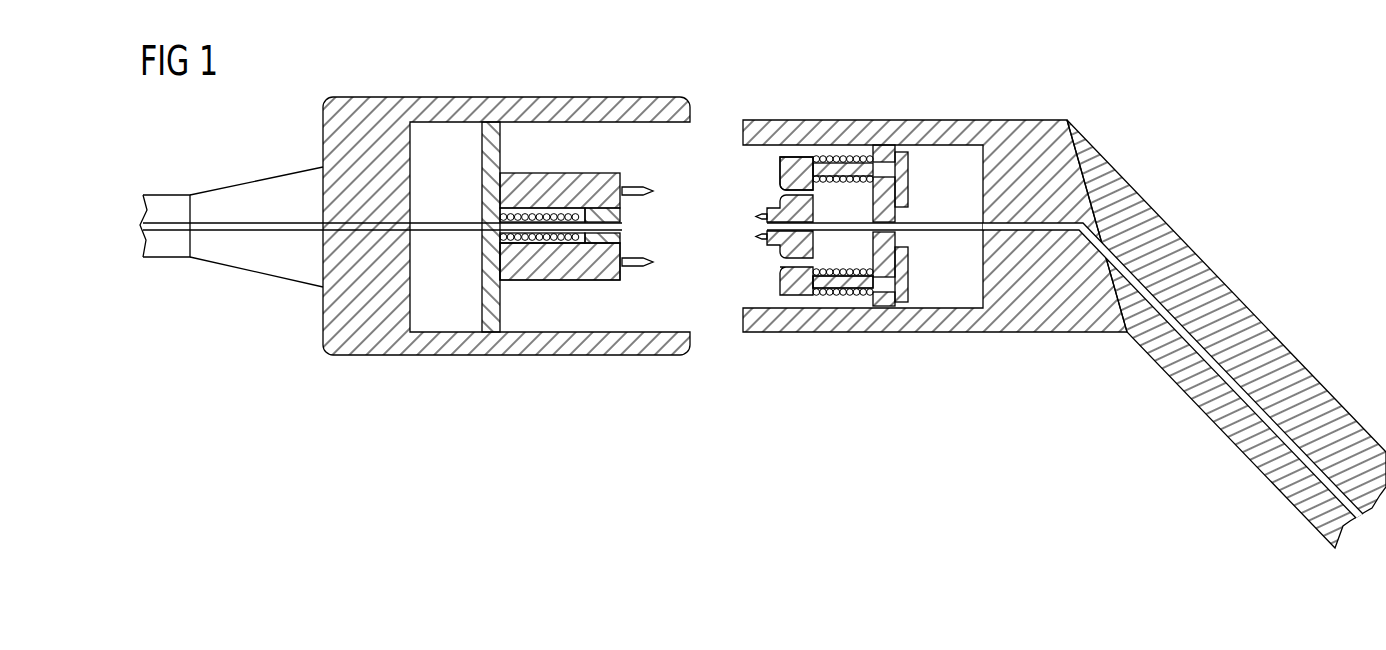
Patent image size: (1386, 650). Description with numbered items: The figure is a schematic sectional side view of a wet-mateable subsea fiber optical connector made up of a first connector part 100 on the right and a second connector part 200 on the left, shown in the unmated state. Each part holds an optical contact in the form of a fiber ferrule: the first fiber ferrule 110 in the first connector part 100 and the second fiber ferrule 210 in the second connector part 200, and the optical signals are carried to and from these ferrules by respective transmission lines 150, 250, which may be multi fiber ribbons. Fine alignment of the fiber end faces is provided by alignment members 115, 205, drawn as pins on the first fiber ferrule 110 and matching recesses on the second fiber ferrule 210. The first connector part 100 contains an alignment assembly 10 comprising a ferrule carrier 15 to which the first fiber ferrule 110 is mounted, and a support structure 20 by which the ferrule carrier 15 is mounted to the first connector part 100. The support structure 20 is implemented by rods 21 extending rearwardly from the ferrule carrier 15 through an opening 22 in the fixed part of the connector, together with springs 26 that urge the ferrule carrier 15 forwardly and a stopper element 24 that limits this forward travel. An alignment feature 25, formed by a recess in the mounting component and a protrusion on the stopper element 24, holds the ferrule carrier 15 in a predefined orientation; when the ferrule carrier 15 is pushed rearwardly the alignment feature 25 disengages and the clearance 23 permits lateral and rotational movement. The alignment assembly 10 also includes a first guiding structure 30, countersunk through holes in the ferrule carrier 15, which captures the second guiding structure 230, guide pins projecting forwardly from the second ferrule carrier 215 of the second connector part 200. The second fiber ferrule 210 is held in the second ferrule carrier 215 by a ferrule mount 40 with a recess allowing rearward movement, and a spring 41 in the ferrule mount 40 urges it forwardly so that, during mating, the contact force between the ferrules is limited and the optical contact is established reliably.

The alignment assembly 10 is at (1064, 311).
The ferrule carrier 15 is at (795, 170).
The support structure 20 is at (873, 279).
The rods 21 is at (830, 298).
The opening 22 is at (882, 296).
The clearance 23 is at (843, 298).
The stopper element 24 is at (908, 167).
The alignment feature 25 is at (908, 198).
The springs 26 is at (838, 268).
The first guiding structure 30 is at (786, 190).
The ferrule mount 40 is at (592, 245).
The spring 41 is at (547, 250).
The first connector part 100 is at (1042, 311).
The first fiber ferrule 110 is at (767, 238).
The alignment member 115 is at (767, 214).
The transmission line 150 is at (1058, 226).
The second connector part 200 is at (420, 275).
The alignment member 205 is at (622, 216).
The second fiber ferrule 210 is at (603, 208).
The second ferrule carrier 215 is at (561, 172).
The second guiding structure 230 is at (636, 187).
The transmission line 250 is at (248, 229).